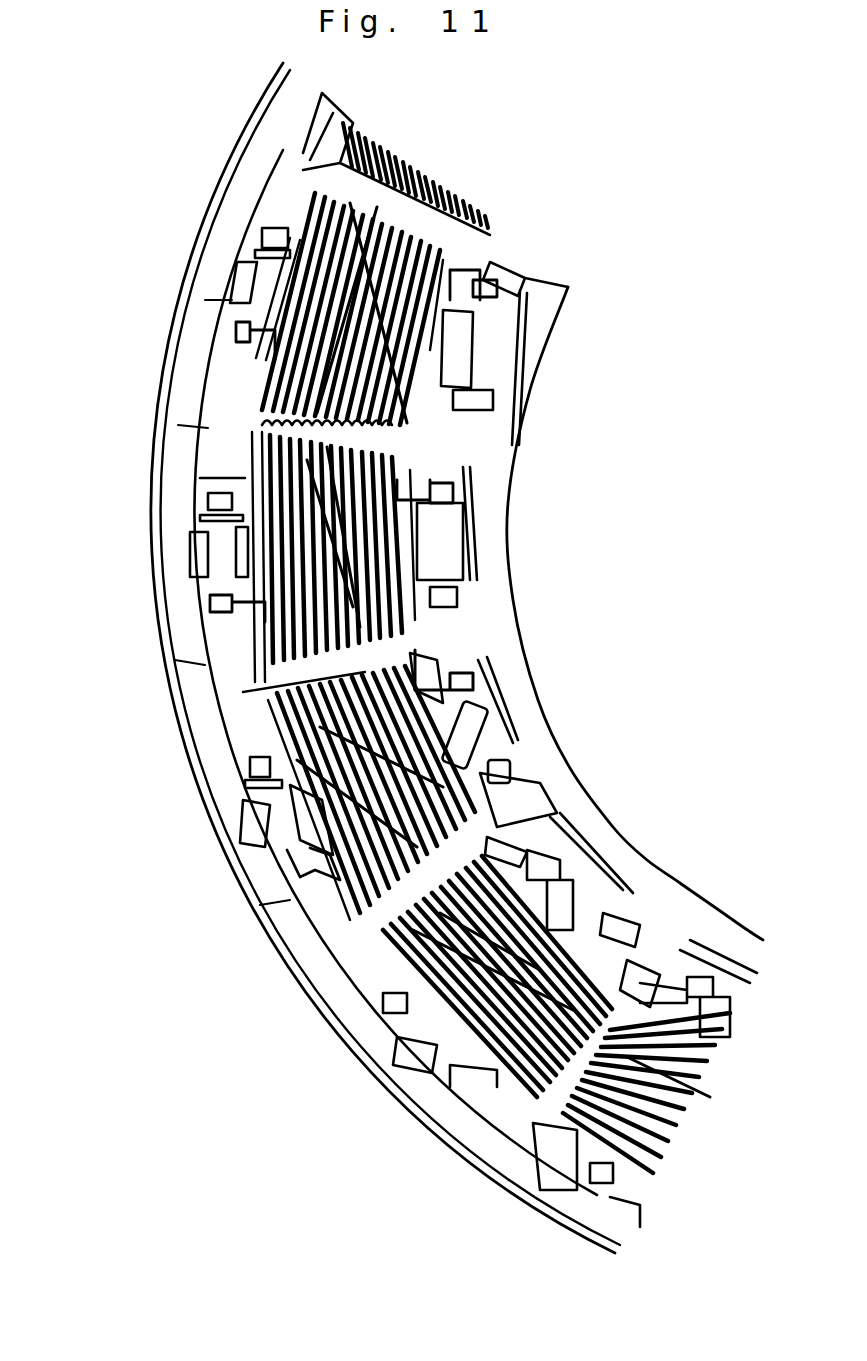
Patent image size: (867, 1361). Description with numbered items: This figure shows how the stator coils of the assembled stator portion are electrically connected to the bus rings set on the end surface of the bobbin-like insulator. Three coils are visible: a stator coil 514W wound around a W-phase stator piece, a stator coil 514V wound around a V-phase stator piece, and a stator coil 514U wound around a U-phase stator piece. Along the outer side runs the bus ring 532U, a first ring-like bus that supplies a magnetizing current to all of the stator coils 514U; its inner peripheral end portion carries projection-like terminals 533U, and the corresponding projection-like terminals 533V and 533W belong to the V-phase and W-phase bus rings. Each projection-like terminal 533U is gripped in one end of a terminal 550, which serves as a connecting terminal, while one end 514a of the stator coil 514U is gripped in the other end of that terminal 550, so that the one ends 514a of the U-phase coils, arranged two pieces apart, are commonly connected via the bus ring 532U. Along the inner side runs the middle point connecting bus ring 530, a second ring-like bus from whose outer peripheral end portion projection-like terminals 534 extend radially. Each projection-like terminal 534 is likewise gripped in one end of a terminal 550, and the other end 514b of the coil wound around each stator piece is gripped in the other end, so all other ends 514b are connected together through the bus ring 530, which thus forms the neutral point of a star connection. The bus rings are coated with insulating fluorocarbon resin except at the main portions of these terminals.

The stator coil wound around W-phase stator piece 514W is at (300, 355).
The stator coil wound around V-phase stator piece 514V is at (255, 470).
The stator coil wound around U-phase stator piece 514U is at (300, 715).
The one end of stator coil 514a is at (330, 855).
The other end of stator coil 514b is at (440, 660).
The projection-like terminal of bus ring 532W 533W is at (257, 240).
The projection-like terminal of bus ring 532V 533V is at (195, 500).
The projection-like terminal of bus ring 532U 533U is at (245, 780).
The bus ring 532U is at (175, 650).
The projection-like terminal of middle point connecting bus ring 534 is at (517, 753).
The terminal 550 is at (263, 297).
The middle point connecting bus ring 530 is at (622, 840).